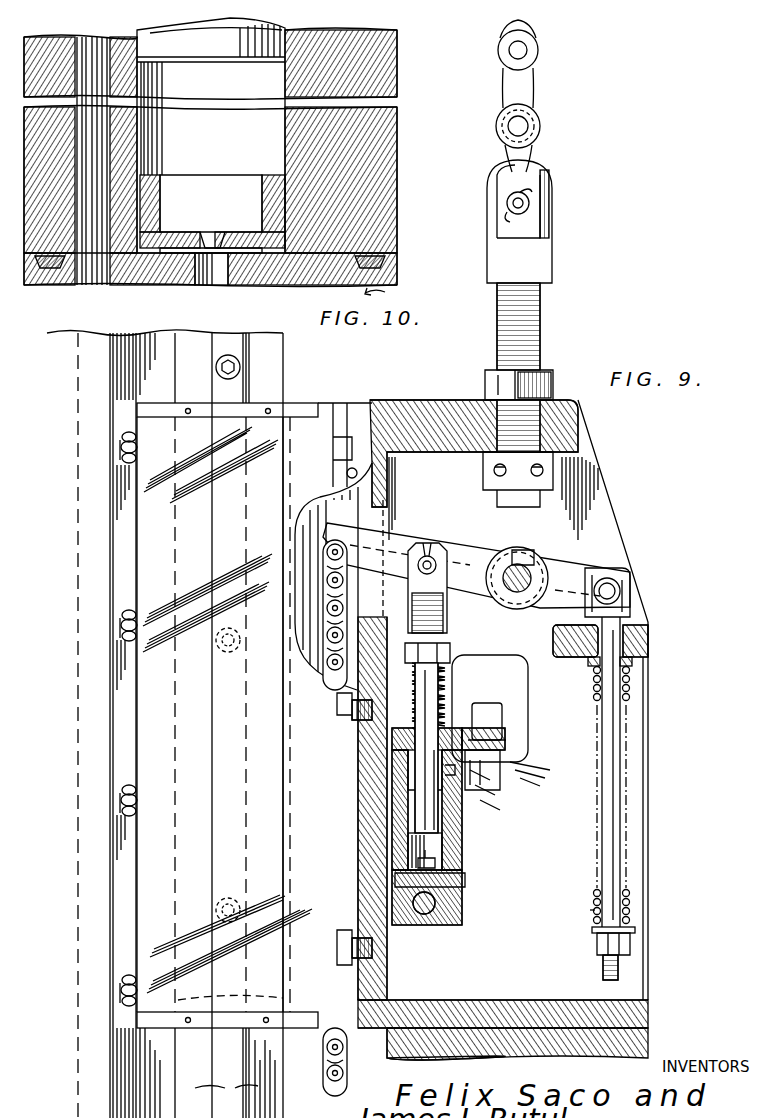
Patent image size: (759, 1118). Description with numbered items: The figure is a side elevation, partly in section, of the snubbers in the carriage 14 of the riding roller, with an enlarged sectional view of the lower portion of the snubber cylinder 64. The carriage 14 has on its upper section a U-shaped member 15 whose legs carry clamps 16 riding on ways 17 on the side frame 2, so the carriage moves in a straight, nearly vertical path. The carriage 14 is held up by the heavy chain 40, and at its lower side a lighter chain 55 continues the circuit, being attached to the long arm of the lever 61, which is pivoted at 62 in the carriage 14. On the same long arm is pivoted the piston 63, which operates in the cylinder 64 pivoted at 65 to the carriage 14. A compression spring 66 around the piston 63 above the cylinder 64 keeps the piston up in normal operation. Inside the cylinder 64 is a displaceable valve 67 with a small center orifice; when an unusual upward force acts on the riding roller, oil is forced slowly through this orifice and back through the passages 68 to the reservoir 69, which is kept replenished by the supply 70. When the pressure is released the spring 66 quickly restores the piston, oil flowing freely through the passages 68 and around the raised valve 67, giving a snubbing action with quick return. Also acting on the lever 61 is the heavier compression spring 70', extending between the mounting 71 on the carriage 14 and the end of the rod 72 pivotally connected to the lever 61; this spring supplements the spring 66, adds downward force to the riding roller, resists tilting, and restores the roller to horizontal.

In FIG. 9, the side frame 2 is at (272, 378).
In FIG. 9, the carriage 14 is at (623, 547).
In FIG. 9, the U-shaped member 15 is at (314, 968).
In FIG. 9, the clamp 16 is at (230, 990).
In FIG. 9, the way 17 is at (226, 1078).
In FIG. 9, the chain 40 is at (530, 108).
In FIG. 9, the lighter chain 55 is at (347, 1070).
In FIG. 9, the lever 61 is at (407, 538).
In FIG. 9, the pivot 62 is at (528, 567).
In FIG. 10, the piston 63 is at (152, 35).
In FIG. 9, the piston 63 is at (425, 765).
In FIG. 10, the cylinder 64 is at (398, 138).
In FIG. 9, the cylinder 64 is at (453, 858).
In FIG. 9, the pivot 65 is at (427, 913).
In FIG. 9, the compression spring 66 is at (440, 716).
In FIG. 10, the displaceable valve 67 is at (210, 240).
In FIG. 9, the displaceable valve 67 is at (430, 858).
In FIG. 10, the passages 68 is at (106, 40).
In FIG. 9, the passages 68 is at (400, 840).
In FIG. 9, the reservoir 69 is at (407, 778).
In FIG. 9, the supply 70 is at (501, 722).
In FIG. 9, the heavier compression spring 70' is at (572, 903).
In FIG. 9, the mounting 71 is at (553, 637).
In FIG. 9, the rod 72 is at (608, 905).